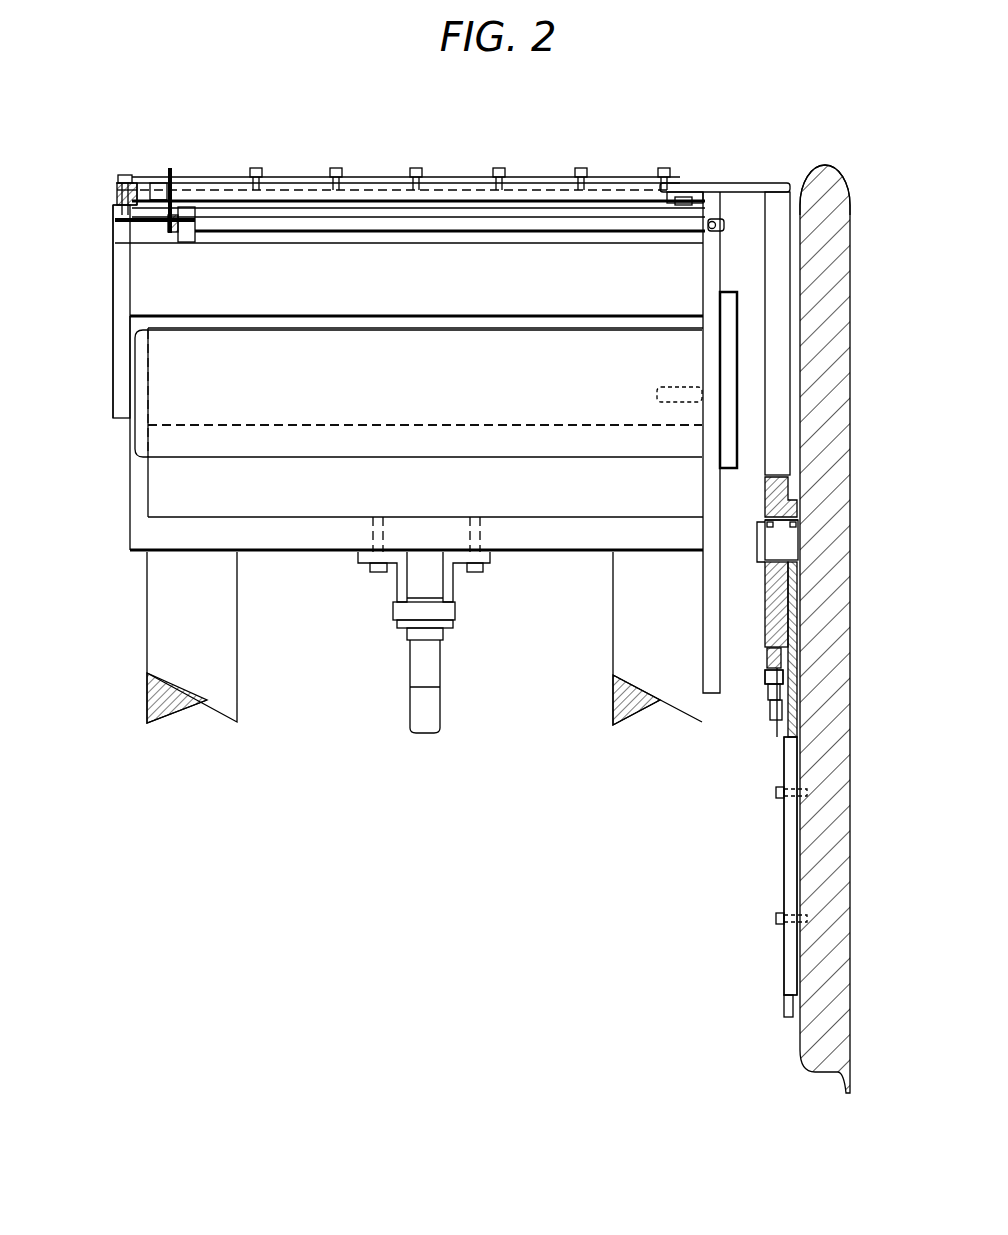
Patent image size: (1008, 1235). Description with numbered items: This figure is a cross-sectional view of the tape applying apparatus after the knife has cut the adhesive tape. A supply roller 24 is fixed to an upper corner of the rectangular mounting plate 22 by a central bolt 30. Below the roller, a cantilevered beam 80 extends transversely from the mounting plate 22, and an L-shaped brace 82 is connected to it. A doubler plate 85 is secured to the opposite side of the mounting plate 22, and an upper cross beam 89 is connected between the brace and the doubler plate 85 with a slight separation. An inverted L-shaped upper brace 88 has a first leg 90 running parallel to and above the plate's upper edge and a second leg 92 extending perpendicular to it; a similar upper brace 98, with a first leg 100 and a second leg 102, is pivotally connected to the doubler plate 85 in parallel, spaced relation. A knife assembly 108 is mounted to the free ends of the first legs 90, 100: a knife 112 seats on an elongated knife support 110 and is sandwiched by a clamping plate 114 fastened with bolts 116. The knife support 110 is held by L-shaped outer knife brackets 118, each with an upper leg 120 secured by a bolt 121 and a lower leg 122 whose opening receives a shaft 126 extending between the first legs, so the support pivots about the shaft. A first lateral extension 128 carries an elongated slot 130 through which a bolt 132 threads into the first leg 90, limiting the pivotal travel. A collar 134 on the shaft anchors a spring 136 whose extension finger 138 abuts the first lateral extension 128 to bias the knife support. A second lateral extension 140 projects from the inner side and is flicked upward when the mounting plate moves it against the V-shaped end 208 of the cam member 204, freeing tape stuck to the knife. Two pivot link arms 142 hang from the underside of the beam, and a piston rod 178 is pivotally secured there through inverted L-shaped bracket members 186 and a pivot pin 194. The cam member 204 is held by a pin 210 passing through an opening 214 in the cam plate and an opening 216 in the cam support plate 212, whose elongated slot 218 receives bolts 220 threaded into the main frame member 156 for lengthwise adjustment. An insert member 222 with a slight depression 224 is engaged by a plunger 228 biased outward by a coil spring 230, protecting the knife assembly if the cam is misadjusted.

The mounting plate 22 is at (790, 713).
The supply roller 24 is at (147, 406).
The central bolt 30 is at (668, 387).
The cantilevered beam 80 is at (583, 553).
The L-shaped brace 82 is at (128, 490).
The doubler plate 85 is at (728, 343).
The inverted L-shaped upper brace 88 is at (113, 262).
The upper cross beam 89 is at (192, 428).
The first leg 90 is at (117, 214).
The second leg 92 is at (113, 338).
The inverted L-shaped upper brace 98 is at (700, 268).
The first leg 100 is at (727, 200).
The second leg 102 is at (700, 288).
The knife assembly 108 is at (548, 172).
The knife support 110 is at (258, 168).
The knife 112 is at (337, 168).
The clamping plate 114 is at (416, 168).
The bolts 116 is at (498, 168).
The L-shaped outer knife bracket 118 is at (722, 231).
The upper leg 120 is at (148, 185).
The bolt 121 is at (680, 212).
The lower leg 122 is at (668, 170).
The shaft 126 is at (434, 231).
The first lateral extension 128 is at (118, 180).
The slot 130 is at (118, 194).
The bolt 132 is at (124, 175).
The collar 134 is at (195, 238).
The spring 136 is at (175, 232).
The extension finger 138 is at (173, 195).
The second lateral extension 140 is at (775, 183).
The pivot link arms 142 is at (237, 675).
The main frame member 156 is at (828, 620).
The piston rod 178 is at (440, 690).
The inverted L-shaped bracket members 186 is at (397, 590).
The pivot pin 194 is at (393, 614).
The cam member 204 is at (770, 858).
The V-shaped end 208 is at (802, 195).
The pin 210 is at (782, 541).
The cam support plate 212 is at (783, 970).
The opening 214 is at (763, 520).
The opening 216 is at (800, 520).
The elongated slot 218 is at (786, 886).
The bolts 220 is at (776, 792).
The insert member 222 is at (767, 660).
The depression 224 is at (783, 678).
The plunger 228 is at (767, 694).
The coil spring 230 is at (775, 718).